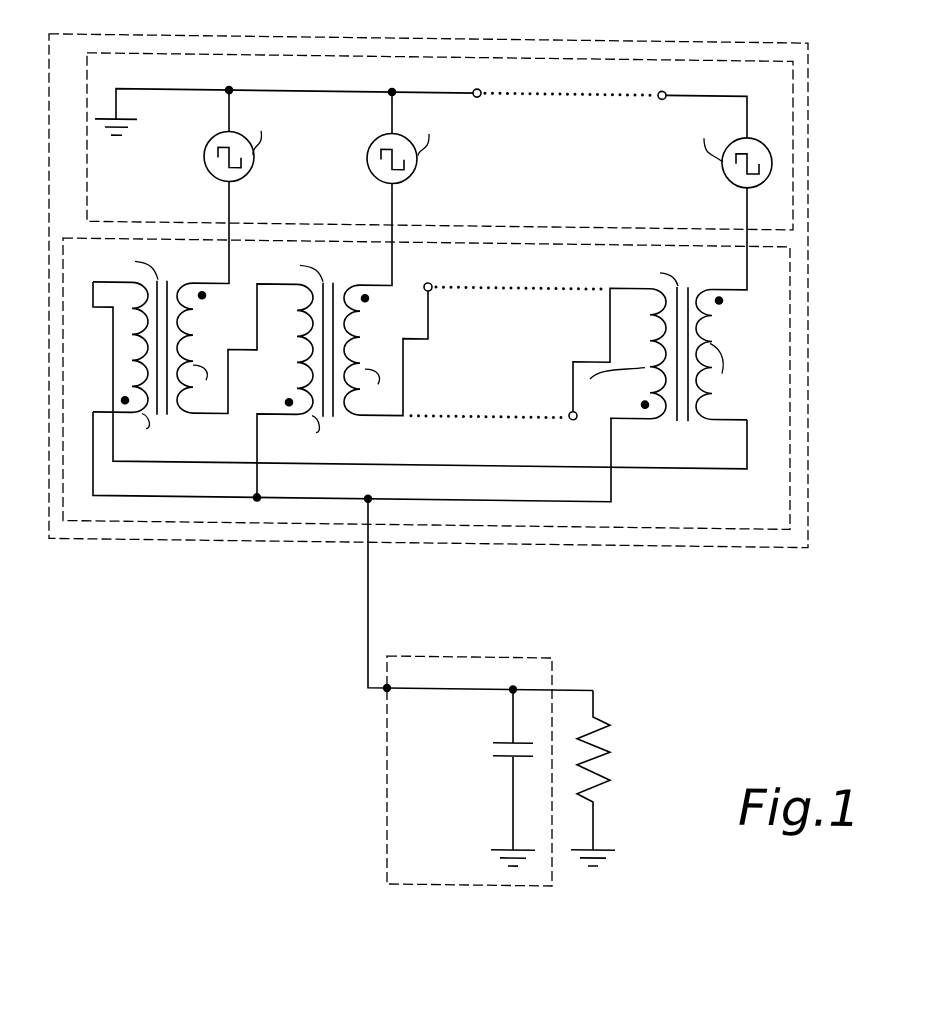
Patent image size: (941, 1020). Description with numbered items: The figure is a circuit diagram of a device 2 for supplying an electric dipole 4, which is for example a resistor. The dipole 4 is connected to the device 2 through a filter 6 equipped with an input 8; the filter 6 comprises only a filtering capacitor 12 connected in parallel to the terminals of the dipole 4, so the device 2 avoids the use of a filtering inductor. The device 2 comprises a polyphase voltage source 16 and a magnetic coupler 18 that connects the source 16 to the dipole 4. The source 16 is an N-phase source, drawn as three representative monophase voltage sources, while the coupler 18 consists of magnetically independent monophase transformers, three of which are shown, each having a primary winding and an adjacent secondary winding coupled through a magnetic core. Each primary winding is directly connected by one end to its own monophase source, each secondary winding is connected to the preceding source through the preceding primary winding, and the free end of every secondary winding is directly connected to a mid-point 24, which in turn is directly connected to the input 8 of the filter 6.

The device 2 is at (812, 72).
The polyphase voltage source 16 is at (798, 126).
The magnetic coupler 18 is at (793, 363).
The mid-point 24 is at (369, 501).
The input 8 is at (386, 691).
The electric dipole 4 is at (612, 750).
The filtering capacitor 12 is at (493, 757).
The filter 6 is at (521, 789).